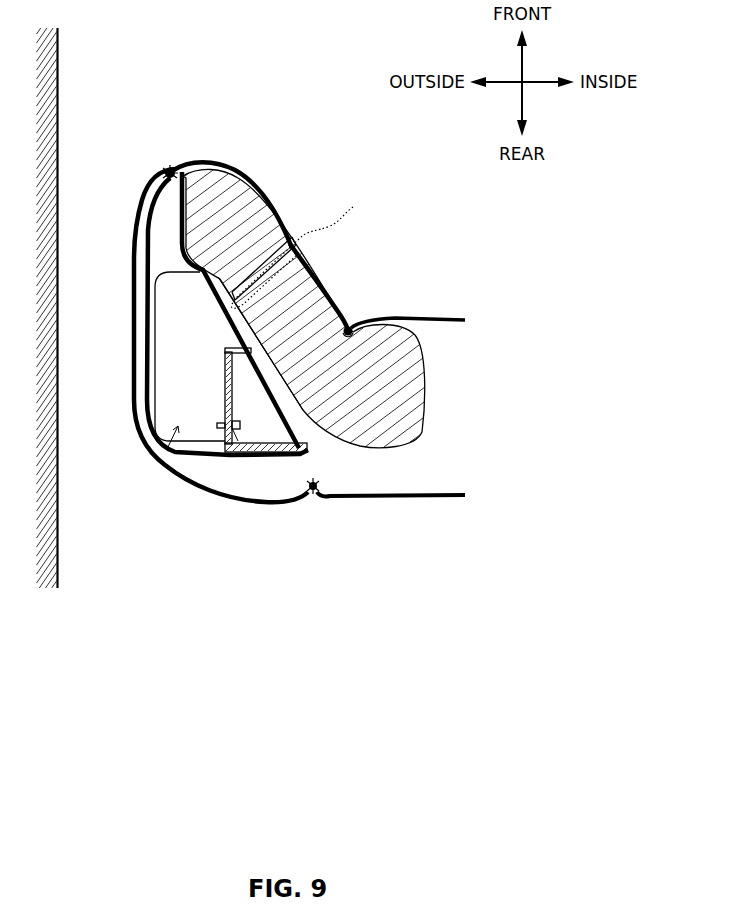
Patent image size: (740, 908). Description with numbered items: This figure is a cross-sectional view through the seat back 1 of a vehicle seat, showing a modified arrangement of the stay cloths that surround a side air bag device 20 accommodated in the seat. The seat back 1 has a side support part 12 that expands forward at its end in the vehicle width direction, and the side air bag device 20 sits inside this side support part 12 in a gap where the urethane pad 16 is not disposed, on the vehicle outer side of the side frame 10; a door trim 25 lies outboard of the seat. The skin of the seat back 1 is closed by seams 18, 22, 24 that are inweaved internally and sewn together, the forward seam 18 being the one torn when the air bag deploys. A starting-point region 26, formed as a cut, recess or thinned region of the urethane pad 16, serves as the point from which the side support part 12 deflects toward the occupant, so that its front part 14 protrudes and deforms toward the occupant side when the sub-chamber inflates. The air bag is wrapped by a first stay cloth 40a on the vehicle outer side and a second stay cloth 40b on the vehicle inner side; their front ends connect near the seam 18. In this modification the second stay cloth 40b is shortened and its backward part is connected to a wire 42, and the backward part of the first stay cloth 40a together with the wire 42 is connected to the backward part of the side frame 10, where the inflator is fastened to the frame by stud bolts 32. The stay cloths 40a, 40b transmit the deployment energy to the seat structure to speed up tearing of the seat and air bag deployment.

The seat back 1 is at (450, 457).
The side frame 10 is at (308, 451).
The side support part 12 is at (279, 203).
The front part 14 is at (204, 162).
The urethane pad 16 is at (334, 284).
The forward seam 18 is at (165, 172).
The side air bag device 20 is at (157, 461).
The seam 22 is at (361, 316).
The seam 24 is at (312, 492).
The door trim 25 is at (58, 40).
The starting-point region 26 is at (299, 248).
The stud bolts 32 is at (236, 456).
The first stay cloth 40a is at (132, 254).
The second stay cloth 40b is at (156, 222).
The wire 42 is at (274, 424).